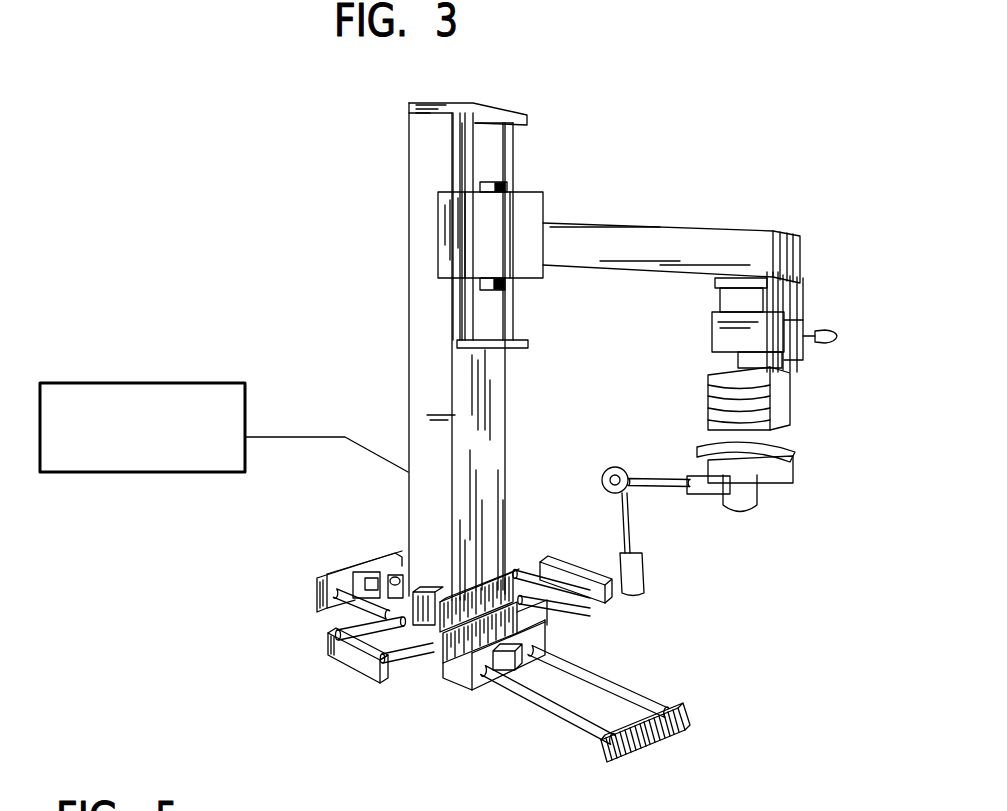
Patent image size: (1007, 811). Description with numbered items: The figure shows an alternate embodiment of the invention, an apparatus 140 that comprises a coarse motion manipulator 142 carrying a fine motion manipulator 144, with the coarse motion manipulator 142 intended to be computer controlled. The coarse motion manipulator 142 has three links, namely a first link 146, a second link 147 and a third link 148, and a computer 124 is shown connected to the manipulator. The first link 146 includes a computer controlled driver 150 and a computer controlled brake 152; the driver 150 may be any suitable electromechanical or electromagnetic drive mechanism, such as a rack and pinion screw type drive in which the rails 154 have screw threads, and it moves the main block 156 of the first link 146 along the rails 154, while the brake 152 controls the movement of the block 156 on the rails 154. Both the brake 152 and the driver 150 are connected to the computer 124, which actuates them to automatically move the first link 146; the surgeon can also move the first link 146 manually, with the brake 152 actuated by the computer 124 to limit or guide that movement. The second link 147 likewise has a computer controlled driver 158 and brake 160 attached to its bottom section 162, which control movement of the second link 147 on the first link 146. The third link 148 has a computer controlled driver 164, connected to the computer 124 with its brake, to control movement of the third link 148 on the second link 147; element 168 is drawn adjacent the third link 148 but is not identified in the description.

The computer 124 is at (155, 383).
The apparatus 140 is at (266, 171).
The coarse motion manipulator 142 is at (408, 301).
The fine motion manipulator 144 is at (785, 405).
The first link 146 is at (547, 637).
The second link 147 is at (458, 657).
The third link 148 is at (650, 225).
The driver 150 is at (522, 660).
The brake 152 is at (362, 572).
The rails 154 is at (650, 702).
The main block 156 is at (547, 630).
The driver 158 is at (437, 600).
The brake 160 is at (510, 572).
The bottom section 162 is at (345, 628).
The driver 164 is at (488, 182).
The lower stop 168 is at (496, 290).